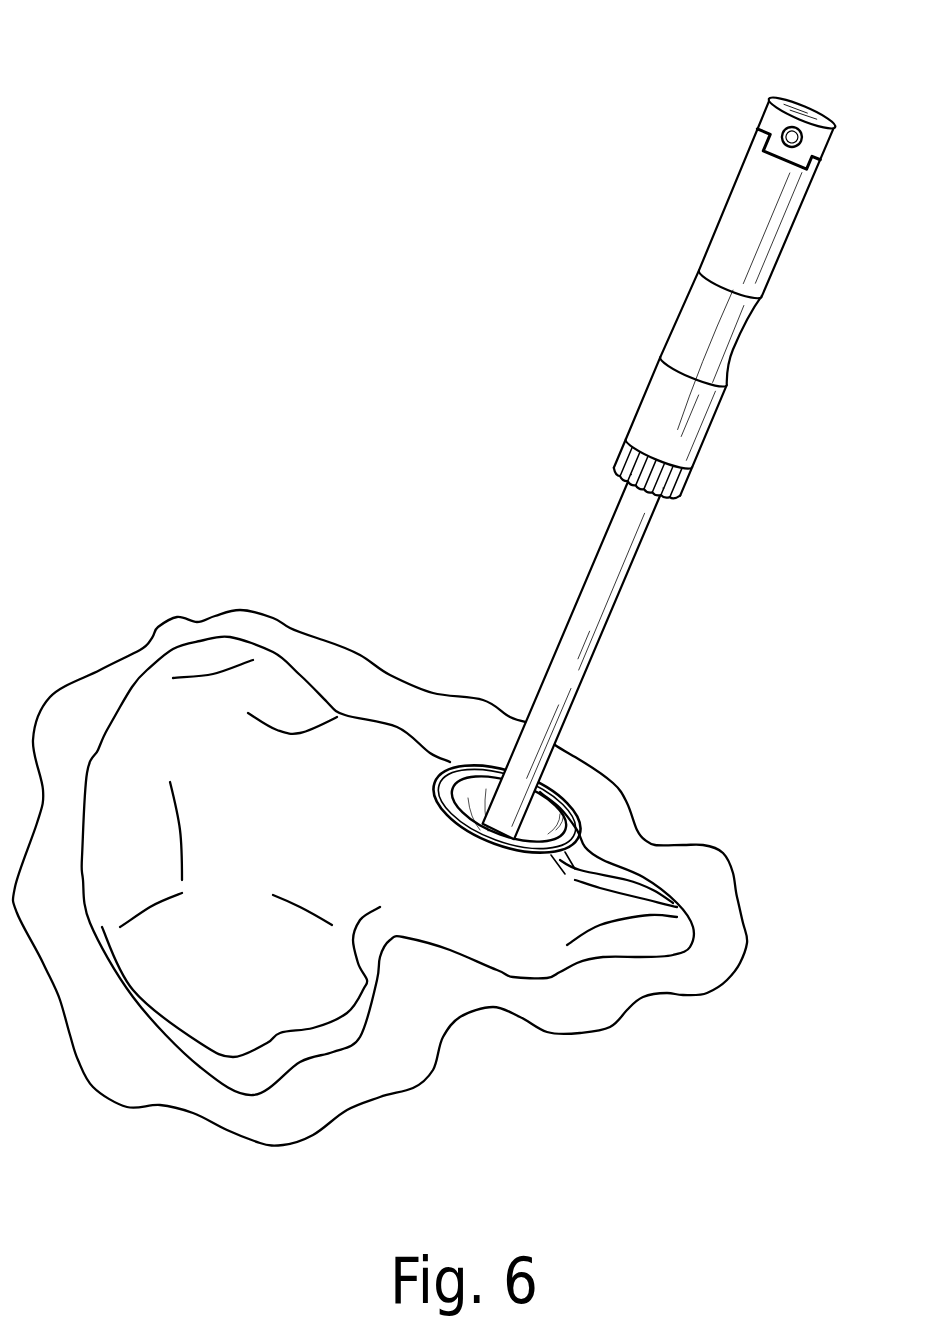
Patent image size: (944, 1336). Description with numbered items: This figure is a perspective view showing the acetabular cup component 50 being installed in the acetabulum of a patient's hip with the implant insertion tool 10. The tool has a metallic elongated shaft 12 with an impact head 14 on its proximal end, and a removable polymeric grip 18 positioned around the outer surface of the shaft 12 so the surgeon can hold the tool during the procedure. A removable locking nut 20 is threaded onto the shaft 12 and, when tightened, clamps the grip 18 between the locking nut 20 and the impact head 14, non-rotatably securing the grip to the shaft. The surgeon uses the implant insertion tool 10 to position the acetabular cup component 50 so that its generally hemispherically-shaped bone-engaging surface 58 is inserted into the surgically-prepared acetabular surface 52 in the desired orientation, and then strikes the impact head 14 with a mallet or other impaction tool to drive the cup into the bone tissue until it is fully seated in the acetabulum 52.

The implant insertion tool 10 is at (681, 445).
The elongated shaft 12 is at (572, 656).
The impact head 14 is at (827, 142).
The grip 18 is at (773, 253).
The locking nut 20 is at (665, 475).
The acetabular cup component 50 is at (542, 761).
The surgically-prepared acetabulum 52 is at (440, 768).
The bone-engaging surface 58 is at (592, 858).